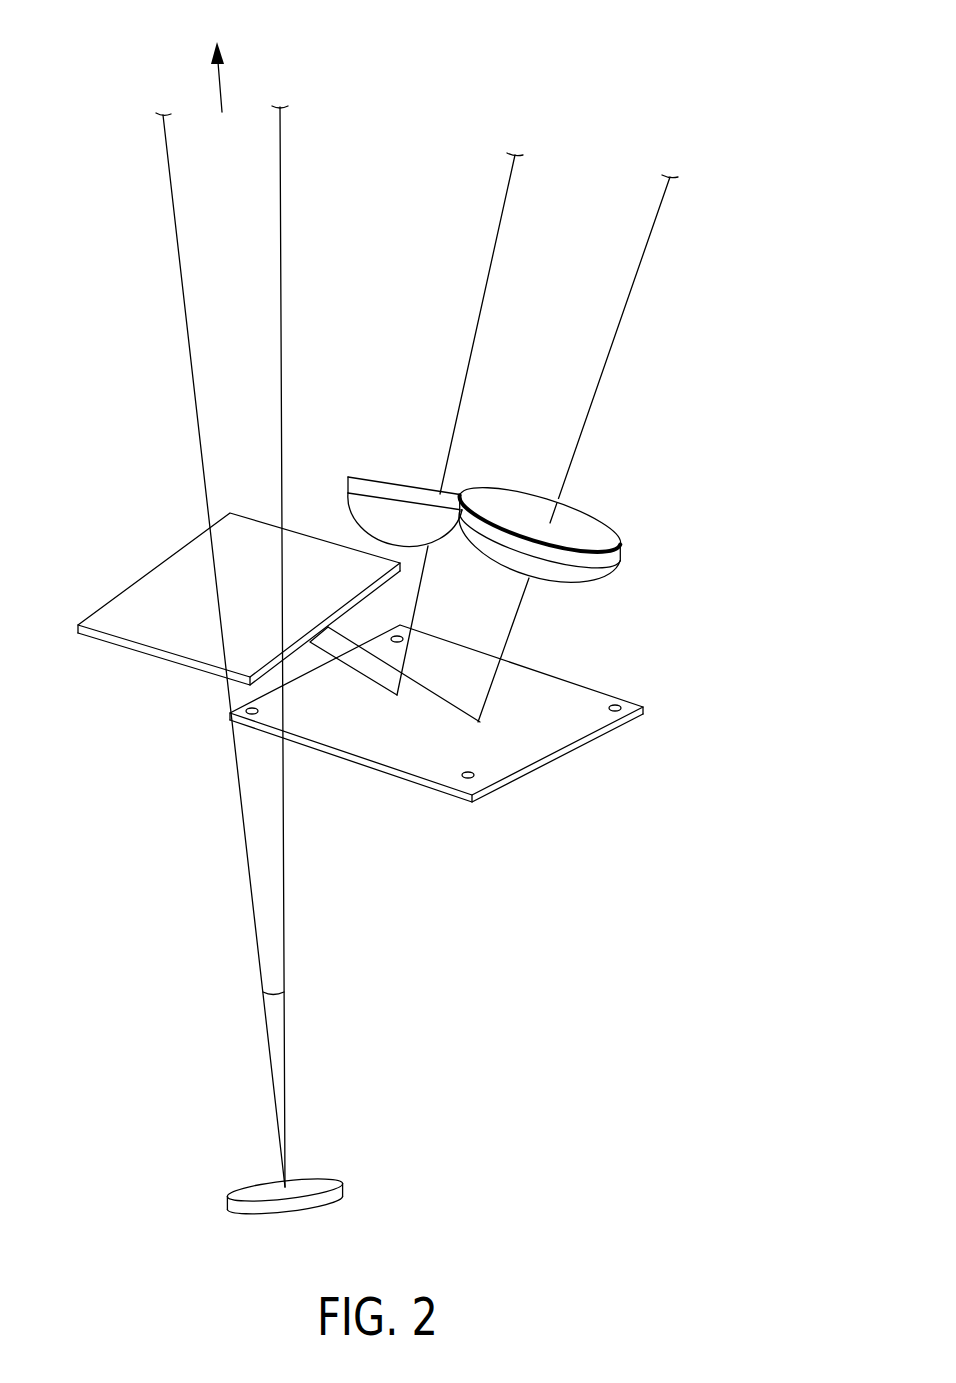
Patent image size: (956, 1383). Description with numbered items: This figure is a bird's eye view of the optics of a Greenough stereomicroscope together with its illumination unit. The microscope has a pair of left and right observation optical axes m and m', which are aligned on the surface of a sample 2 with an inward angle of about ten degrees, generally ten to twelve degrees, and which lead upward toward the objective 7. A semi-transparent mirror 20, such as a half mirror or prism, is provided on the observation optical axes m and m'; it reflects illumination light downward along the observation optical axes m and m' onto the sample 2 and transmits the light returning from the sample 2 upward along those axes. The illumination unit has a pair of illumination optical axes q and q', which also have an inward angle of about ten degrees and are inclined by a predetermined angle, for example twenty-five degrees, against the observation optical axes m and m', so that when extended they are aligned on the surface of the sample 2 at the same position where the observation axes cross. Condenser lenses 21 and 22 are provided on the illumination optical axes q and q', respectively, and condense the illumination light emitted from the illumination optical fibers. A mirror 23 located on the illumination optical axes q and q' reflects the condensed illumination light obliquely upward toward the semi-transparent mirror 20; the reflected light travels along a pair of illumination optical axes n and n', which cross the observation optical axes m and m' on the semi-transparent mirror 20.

The sample 2 is at (260, 1190).
The objective lens 7 is at (218, 58).
The semi-transparent mirror 20 is at (178, 640).
The condenser lens 21 is at (587, 525).
The condenser lens 22 is at (400, 478).
The mirror 23 is at (540, 742).
The observation optical axis m is at (309, 646).
The observation optical axis m' is at (194, 650).
The illumination optical axis q is at (578, 448).
The illumination optical axis q' is at (477, 424).
The illumination optical axis n is at (404, 728).
The illumination optical axis n' is at (353, 718).